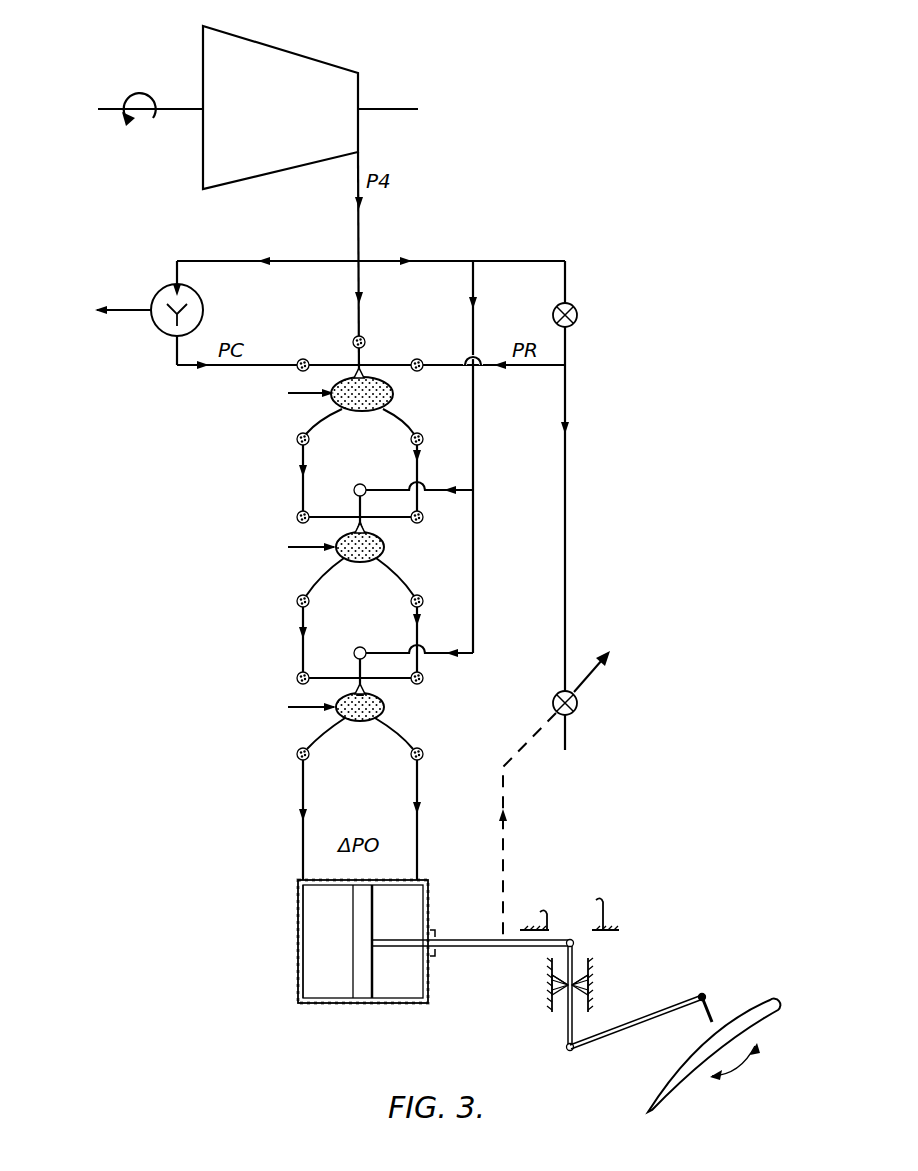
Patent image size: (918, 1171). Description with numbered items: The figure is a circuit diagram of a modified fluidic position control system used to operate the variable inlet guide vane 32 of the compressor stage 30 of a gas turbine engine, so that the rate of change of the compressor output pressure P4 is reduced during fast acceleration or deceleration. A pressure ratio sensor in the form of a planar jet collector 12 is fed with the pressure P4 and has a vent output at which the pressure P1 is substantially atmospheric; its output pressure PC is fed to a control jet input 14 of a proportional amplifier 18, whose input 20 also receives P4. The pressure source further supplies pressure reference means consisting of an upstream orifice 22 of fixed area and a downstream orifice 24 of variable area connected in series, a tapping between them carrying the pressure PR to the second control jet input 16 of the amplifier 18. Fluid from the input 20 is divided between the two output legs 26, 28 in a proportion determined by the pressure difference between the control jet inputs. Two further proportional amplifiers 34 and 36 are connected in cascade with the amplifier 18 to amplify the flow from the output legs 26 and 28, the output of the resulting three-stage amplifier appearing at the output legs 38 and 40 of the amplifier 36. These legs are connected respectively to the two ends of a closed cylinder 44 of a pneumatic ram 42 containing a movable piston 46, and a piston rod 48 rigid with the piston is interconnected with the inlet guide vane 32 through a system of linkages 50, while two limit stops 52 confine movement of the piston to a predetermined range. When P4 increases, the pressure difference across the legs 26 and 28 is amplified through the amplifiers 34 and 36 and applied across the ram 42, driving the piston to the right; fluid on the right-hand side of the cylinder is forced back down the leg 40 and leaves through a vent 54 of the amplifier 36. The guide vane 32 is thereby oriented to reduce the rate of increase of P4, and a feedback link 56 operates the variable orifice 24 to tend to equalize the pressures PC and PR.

The compressor stage 30 is at (345, 58).
The planar jet collector 12 is at (156, 278).
The control jet input 14 is at (303, 358).
The second control jet input 16 is at (418, 358).
The input 20 is at (366, 337).
The upstream orifice 22 is at (578, 312).
The proportional amplifier 18 is at (322, 409).
The output leg 26 is at (297, 443).
The output leg 28 is at (418, 432).
The proportional amplifier 34 is at (324, 565).
The vent 54 is at (385, 707).
The proportional amplifier 36 is at (322, 725).
The output leg 38 is at (300, 760).
The output leg 40 is at (428, 752).
The downstream orifice 24 is at (554, 698).
The feedback link 56 is at (506, 825).
The pneumatic ram 42 is at (286, 995).
The closed cylinder 44 is at (297, 925).
The movable piston 46 is at (362, 985).
The piston rod 48 is at (476, 938).
The system of linkages 50 is at (538, 992).
The limit stops 52 is at (552, 922).
The variable inlet guide vane 32 is at (676, 1068).